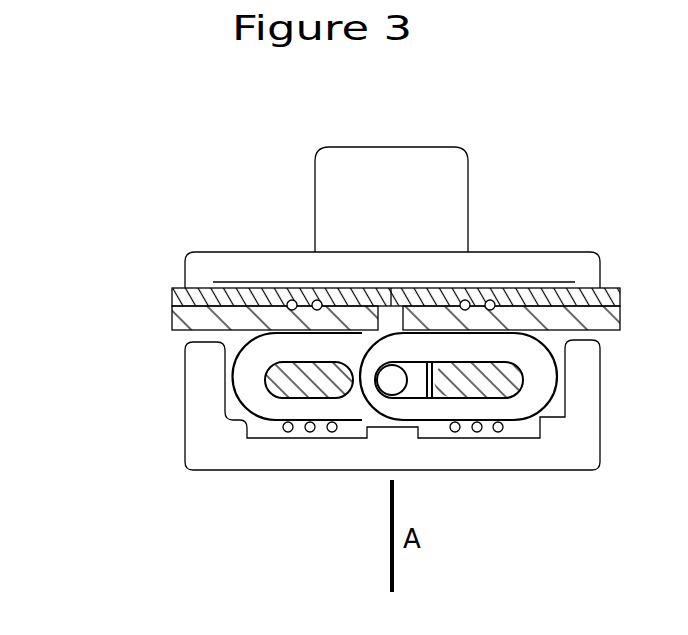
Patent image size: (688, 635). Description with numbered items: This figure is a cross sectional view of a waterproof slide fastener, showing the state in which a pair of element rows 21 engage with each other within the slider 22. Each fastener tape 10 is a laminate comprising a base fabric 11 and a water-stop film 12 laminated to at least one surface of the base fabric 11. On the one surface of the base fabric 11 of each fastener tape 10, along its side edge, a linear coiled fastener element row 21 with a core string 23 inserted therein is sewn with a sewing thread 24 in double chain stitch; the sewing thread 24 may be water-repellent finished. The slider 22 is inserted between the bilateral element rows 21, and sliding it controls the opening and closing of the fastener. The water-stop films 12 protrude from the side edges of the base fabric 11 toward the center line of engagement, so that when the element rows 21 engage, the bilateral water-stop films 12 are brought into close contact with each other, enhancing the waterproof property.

The fastener tape 10 is at (319, 316).
The base fabric 11 is at (172, 320).
The water-stop film 12 is at (172, 295).
The coiled fastener element row 21 is at (233, 366).
The slider 22 is at (390, 470).
The core string 23 is at (266, 386).
The sewing thread 24 is at (290, 300).